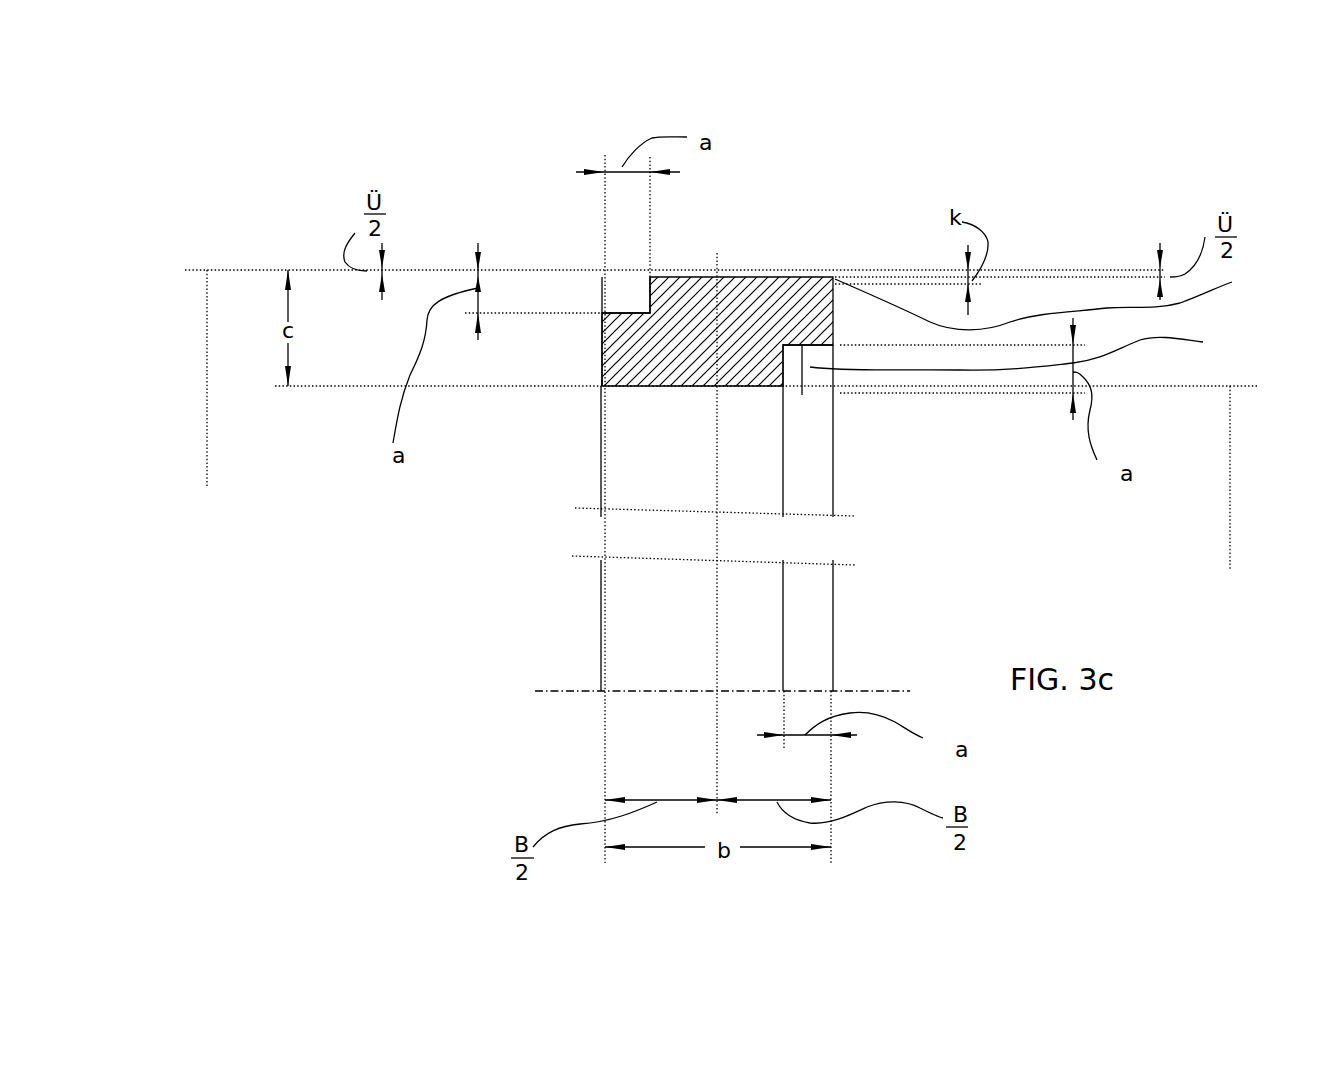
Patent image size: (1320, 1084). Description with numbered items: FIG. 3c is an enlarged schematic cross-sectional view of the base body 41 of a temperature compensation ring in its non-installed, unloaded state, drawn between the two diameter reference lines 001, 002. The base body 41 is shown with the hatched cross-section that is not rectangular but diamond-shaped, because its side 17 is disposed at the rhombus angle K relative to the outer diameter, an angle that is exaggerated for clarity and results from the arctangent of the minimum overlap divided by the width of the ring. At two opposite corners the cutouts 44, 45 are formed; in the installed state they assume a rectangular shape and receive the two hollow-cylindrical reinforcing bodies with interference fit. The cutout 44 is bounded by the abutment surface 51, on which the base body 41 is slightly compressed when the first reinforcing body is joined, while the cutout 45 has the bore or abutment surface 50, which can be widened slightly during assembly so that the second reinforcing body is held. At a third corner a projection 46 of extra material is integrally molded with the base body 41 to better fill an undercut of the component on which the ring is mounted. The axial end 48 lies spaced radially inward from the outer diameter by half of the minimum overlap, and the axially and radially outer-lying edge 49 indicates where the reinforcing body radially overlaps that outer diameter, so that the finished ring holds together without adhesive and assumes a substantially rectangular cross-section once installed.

The side 17 is at (797, 277).
The base body 41 is at (742, 300).
The cutout 44 is at (623, 297).
The cutout 45 is at (1022, 353).
The projection 46 is at (602, 378).
The axial end 48 is at (1053, 303).
The edge 49 is at (603, 269).
The abutment surface 50 is at (802, 395).
The abutment surface 51 is at (600, 330).
The first reference axis 001 is at (1229, 490).
The second reference axis 002 is at (214, 396).